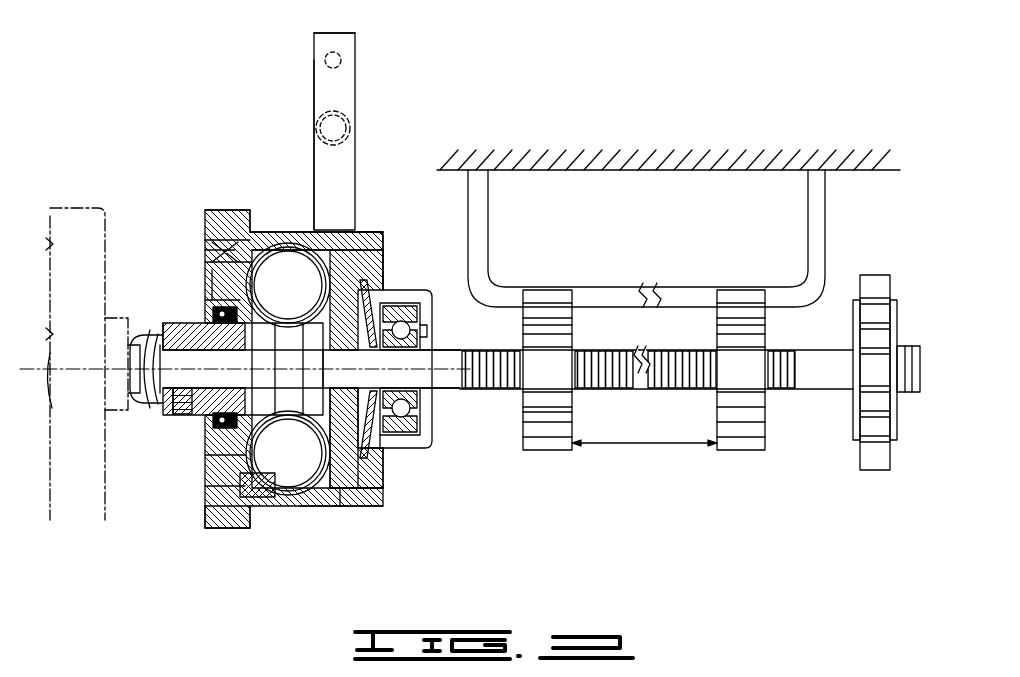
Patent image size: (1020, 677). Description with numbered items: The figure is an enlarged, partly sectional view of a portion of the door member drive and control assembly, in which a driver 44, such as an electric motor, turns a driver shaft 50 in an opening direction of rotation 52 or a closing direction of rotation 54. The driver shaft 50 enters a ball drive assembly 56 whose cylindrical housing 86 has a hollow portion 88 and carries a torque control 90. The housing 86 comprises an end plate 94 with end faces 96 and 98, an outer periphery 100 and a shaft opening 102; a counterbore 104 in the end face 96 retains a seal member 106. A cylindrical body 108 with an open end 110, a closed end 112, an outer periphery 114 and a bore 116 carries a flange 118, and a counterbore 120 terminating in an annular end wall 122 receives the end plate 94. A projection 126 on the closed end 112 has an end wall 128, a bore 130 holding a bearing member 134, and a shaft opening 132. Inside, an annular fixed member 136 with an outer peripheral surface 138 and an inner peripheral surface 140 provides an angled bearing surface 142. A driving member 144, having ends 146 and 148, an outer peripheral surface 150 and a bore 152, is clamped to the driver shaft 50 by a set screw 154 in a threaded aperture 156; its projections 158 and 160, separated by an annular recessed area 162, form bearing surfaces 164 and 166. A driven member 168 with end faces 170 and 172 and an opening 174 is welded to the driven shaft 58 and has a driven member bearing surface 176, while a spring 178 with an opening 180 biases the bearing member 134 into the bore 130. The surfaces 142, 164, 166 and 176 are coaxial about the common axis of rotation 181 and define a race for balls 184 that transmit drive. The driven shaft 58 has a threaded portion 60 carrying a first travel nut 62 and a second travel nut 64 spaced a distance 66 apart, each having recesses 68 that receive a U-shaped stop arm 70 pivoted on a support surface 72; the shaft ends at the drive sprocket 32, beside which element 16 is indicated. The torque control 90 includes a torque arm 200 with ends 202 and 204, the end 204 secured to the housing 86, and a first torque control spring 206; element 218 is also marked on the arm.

The drive sprocket 16 is at (872, 450).
The drive sprocket 32 is at (893, 303).
The driver 44 is at (88, 537).
The driver shaft 50 is at (112, 359).
The opening direction of rotation 52 is at (155, 395).
The closing direction of rotation 54 is at (115, 381).
The ball drive assembly 56 is at (258, 226).
The driven shaft 58 is at (447, 356).
The threaded portion 60 is at (684, 384).
The first travel nut 62 is at (530, 452).
The second travel nut 64 is at (750, 452).
The distance 66 is at (635, 447).
The recesses 68 is at (545, 324).
The stop arm 70 is at (780, 284).
The support surface 72 is at (641, 172).
The housing 86 is at (393, 241).
The hollow portion 88 is at (378, 259).
The torque control 90 is at (355, 76).
The end plate 94 is at (210, 508).
The end face 96 is at (206, 487).
The end face 98 is at (217, 283).
The outer periphery 100 is at (227, 232).
The shaft opening 102 is at (212, 313).
The counterbore 104 is at (213, 305).
The seal member 106 is at (212, 456).
The body 108 is at (352, 505).
The open end 110 is at (218, 526).
The closed end 112 is at (386, 478).
The outer periphery 114 is at (378, 490).
The bore 116 is at (358, 503).
The flange 118 is at (241, 518).
The counterbore 120 is at (233, 232).
The annular end wall 122 is at (216, 250).
The projection 126 is at (410, 446).
The end wall 128 is at (428, 312).
The bore 130 is at (400, 306).
The shaft opening 132 is at (430, 333).
The bearing member 134 is at (421, 430).
The fixed member 136 is at (267, 495).
The outer peripheral surface 138 is at (288, 248).
The inner peripheral surface 140 is at (216, 265).
The bearing surface 142 is at (257, 470).
The driving member 144 is at (177, 332).
The end 146 is at (155, 345).
The end 148 is at (322, 377).
The outer peripheral surface 150 is at (167, 333).
The bore 152 is at (228, 380).
The set screw 154 is at (218, 415).
The threaded aperture 156 is at (214, 420).
The projection 158 is at (262, 327).
The projection 160 is at (308, 304).
The annular recessed area 162 is at (280, 312).
The first bearing surface 164 is at (263, 413).
The bearing surface 166 is at (287, 369).
The driven member 168 is at (387, 470).
The end face 170 is at (300, 233).
The end face 172 is at (375, 262).
The opening 174 is at (370, 378).
The driven member bearing surface 176 is at (312, 475).
The spring 178 is at (388, 450).
The opening 180 is at (420, 385).
The common axis of rotation 181 is at (65, 382).
The balls 184 is at (366, 280).
The torque arm 200 is at (314, 79).
The end 202 is at (346, 34).
The end 204 is at (362, 232).
The first torque control spring 206 is at (356, 108).
The pivot hole 218 is at (348, 52).